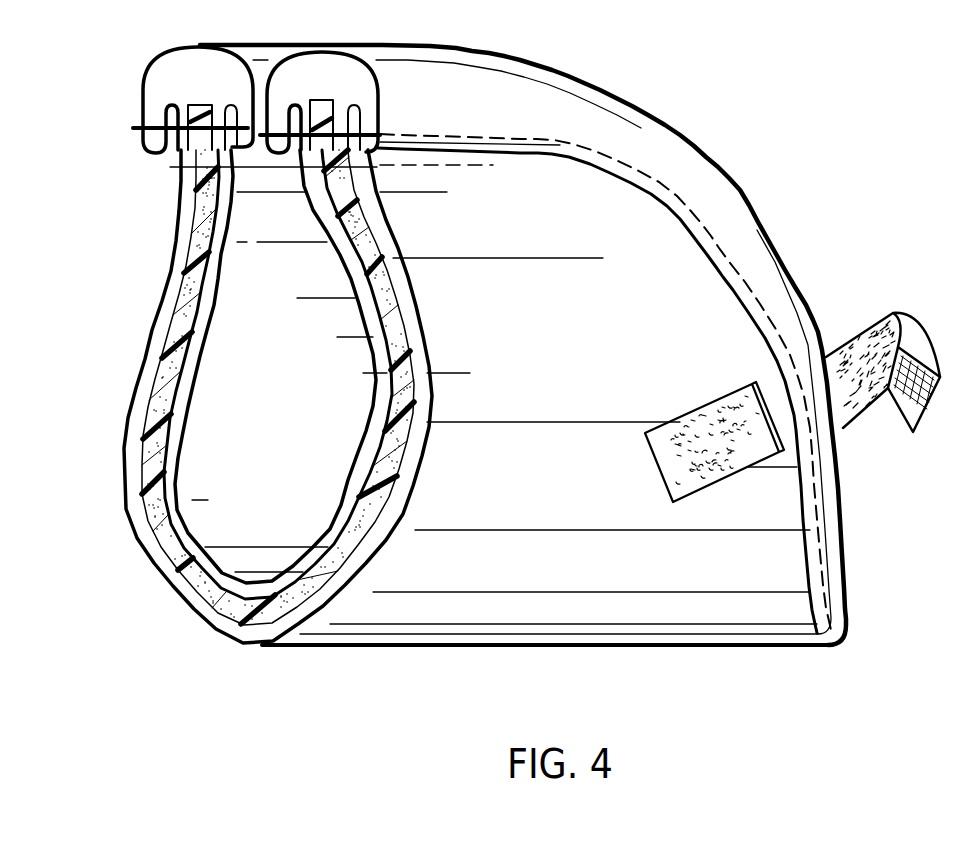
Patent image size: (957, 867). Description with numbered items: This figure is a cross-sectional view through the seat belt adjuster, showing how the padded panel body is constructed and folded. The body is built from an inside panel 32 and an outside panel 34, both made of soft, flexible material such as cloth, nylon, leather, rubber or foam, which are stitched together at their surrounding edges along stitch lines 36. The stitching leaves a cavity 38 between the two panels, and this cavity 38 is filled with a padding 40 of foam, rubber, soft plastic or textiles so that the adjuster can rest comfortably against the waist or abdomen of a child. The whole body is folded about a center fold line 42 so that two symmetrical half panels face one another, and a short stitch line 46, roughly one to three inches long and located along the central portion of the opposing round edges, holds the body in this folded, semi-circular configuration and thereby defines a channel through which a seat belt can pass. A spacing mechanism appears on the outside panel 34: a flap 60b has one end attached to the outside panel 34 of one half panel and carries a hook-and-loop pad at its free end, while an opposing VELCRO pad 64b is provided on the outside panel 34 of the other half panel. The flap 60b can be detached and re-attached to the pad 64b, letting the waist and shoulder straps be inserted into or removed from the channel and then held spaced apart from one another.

The inside panel 32 is at (190, 410).
The outside panel 34 is at (475, 622).
The stitch lines 36 is at (588, 157).
The cavity 38 is at (212, 630).
The padding 40 is at (150, 563).
The center fold line 42 is at (665, 646).
The stitch line 46 is at (460, 167).
The flap 60b is at (893, 311).
The opposing VELCRO pad 64b is at (692, 430).